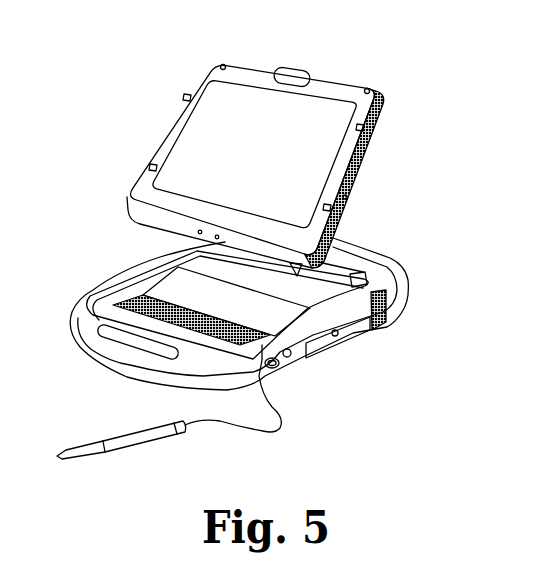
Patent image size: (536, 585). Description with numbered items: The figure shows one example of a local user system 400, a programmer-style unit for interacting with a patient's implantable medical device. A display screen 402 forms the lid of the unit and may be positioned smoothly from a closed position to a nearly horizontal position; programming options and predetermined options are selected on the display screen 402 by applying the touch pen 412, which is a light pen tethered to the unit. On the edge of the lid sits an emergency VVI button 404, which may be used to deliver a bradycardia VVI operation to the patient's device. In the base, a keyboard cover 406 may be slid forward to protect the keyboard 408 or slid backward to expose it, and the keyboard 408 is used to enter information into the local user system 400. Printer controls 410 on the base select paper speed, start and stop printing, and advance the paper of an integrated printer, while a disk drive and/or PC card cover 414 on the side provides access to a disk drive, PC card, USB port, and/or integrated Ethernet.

The local user system 400 is at (259, 248).
The display screen 402 is at (205, 125).
The emergency VVI button 404 is at (152, 165).
The keyboard cover 406 is at (143, 283).
The keyboard 408 is at (110, 287).
The printer controls 410 is at (211, 310).
The touch pen 412 is at (146, 442).
The disk drive and/or PC card cover 414 is at (327, 347).